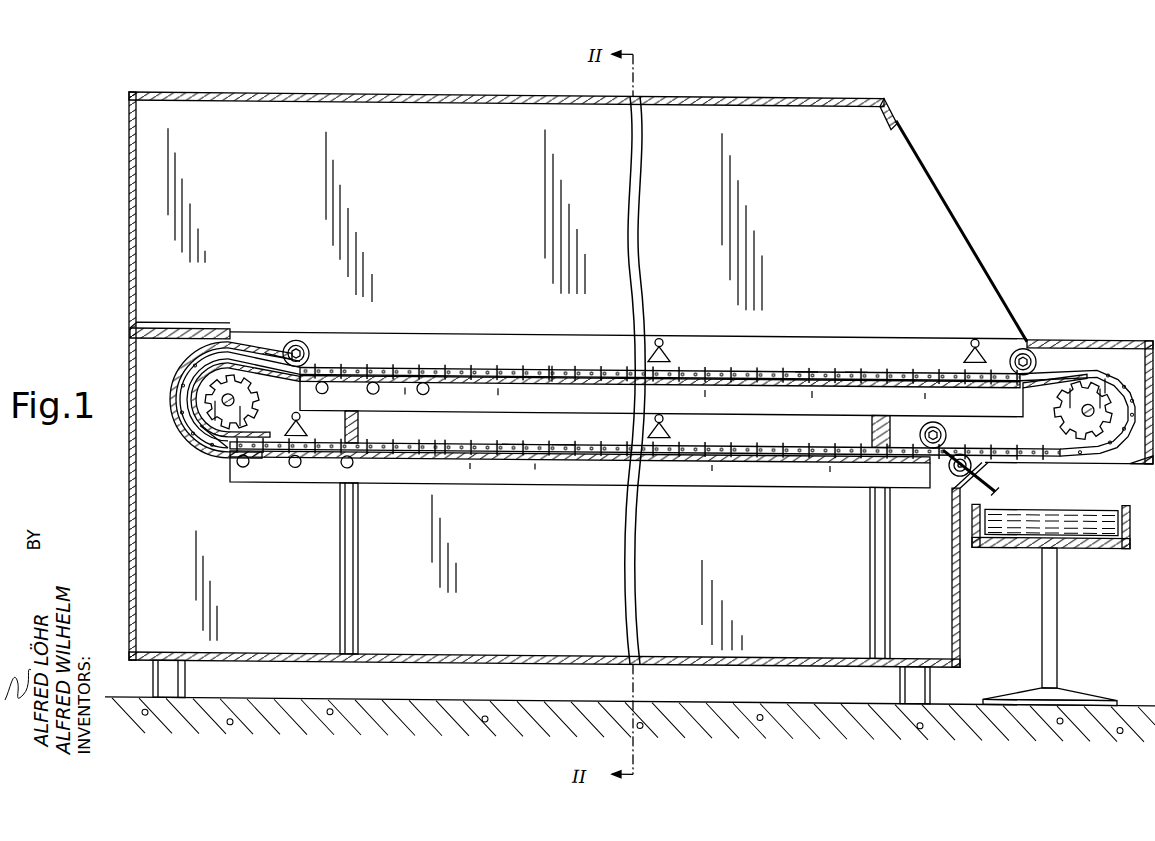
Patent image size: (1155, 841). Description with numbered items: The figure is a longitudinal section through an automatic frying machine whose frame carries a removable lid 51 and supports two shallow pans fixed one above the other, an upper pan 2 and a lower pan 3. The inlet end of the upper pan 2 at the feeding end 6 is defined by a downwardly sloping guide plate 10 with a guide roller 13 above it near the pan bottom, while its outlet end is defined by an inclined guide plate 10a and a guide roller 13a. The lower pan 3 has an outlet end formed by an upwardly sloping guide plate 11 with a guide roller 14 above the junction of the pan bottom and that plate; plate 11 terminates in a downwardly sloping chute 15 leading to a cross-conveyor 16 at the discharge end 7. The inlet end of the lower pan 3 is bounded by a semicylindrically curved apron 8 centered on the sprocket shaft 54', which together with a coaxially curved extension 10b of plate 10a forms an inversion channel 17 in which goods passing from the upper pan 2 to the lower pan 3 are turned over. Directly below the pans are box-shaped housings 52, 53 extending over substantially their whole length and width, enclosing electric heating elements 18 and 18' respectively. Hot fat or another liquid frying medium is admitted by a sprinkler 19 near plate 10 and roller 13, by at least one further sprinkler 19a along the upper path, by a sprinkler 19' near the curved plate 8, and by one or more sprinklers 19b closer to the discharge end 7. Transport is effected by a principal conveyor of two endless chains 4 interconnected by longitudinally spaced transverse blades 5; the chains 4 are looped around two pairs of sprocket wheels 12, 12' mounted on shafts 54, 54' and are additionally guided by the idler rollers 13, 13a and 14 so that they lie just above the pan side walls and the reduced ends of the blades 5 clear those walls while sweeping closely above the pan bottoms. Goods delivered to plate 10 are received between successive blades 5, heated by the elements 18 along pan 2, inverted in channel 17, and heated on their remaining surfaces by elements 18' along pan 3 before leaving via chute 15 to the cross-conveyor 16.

The upper pan 2 is at (684, 376).
The lower pan 3 is at (520, 456).
The endless chains 4 is at (433, 440).
The transverse blades 5 is at (563, 440).
The feeding end 6 is at (990, 332).
The discharge end 7 is at (1085, 458).
The curved apron 8 is at (177, 432).
The guide plate 10 is at (1052, 362).
The inclined guide plate 10a is at (270, 351).
The curved extension 10b is at (197, 446).
The guide plate 11 is at (950, 484).
The sprocket wheels 12 is at (1082, 380).
The sprocket wheels 12' is at (208, 465).
The guide roller 13 is at (1027, 338).
The guide roller 13a is at (303, 339).
The guide roller 14 is at (947, 429).
The chute 15 is at (997, 479).
The cross-conveyor 16 is at (1080, 540).
The inversion channel 17 is at (183, 381).
The electric heating elements 18 is at (372, 343).
The electric heating elements 18' is at (295, 495).
The sprinkler 19 is at (966, 328).
The sprinkler 19a is at (661, 336).
The sprinkler 19b is at (672, 420).
The sprinkler 19' is at (319, 423).
The removable lid 51 is at (905, 172).
The box-shaped housing 52 is at (828, 403).
The box-shaped housing 53 is at (690, 483).
The sprocket shaft 54 is at (1083, 417).
The sprocket shaft 54' is at (242, 402).